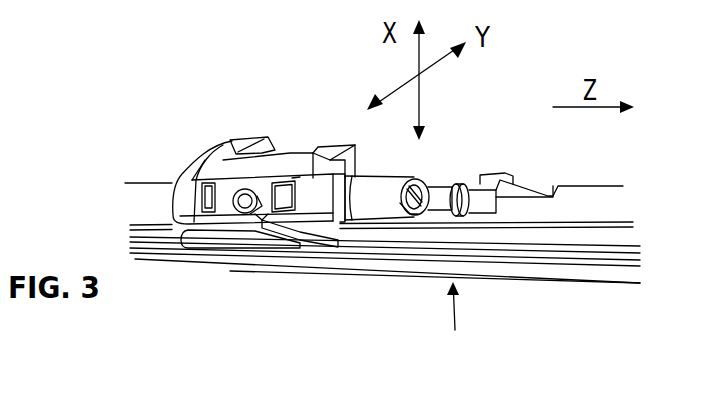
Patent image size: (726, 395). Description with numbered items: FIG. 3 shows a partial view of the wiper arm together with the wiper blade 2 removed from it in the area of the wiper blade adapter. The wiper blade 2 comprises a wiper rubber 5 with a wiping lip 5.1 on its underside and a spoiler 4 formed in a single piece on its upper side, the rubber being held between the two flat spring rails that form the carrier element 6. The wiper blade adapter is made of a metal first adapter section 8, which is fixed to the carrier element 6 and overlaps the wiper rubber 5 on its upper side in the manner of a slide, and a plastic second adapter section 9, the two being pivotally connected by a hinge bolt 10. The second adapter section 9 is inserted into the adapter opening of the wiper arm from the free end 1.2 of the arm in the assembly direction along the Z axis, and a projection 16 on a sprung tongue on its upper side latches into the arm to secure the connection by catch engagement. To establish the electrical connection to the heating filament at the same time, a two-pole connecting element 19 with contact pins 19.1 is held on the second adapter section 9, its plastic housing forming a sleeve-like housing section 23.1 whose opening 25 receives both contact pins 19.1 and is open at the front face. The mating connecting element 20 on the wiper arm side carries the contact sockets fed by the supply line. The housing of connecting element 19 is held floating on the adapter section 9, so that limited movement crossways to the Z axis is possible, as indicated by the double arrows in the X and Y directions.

The free end of the wiper arm 1.2 is at (617, 168).
The wiper blade 2 is at (454, 325).
The spoiler 4 is at (204, 182).
The wiper rubber 5 is at (385, 273).
The wiping lip 5.1 is at (387, 292).
The carrier element 6 is at (296, 270).
The first adapter section 8 is at (240, 277).
The second adapter section 9 is at (239, 108).
The hinge bolt 10 is at (190, 144).
The projection 16 is at (321, 140).
The electrical connecting element on the wiper blade side 19 is at (424, 156).
The contact pins 19.1 is at (550, 123).
The connecting element on the wiper arm side 20 is at (472, 167).
The housing section 23.1 is at (355, 270).
The opening 25 is at (406, 265).